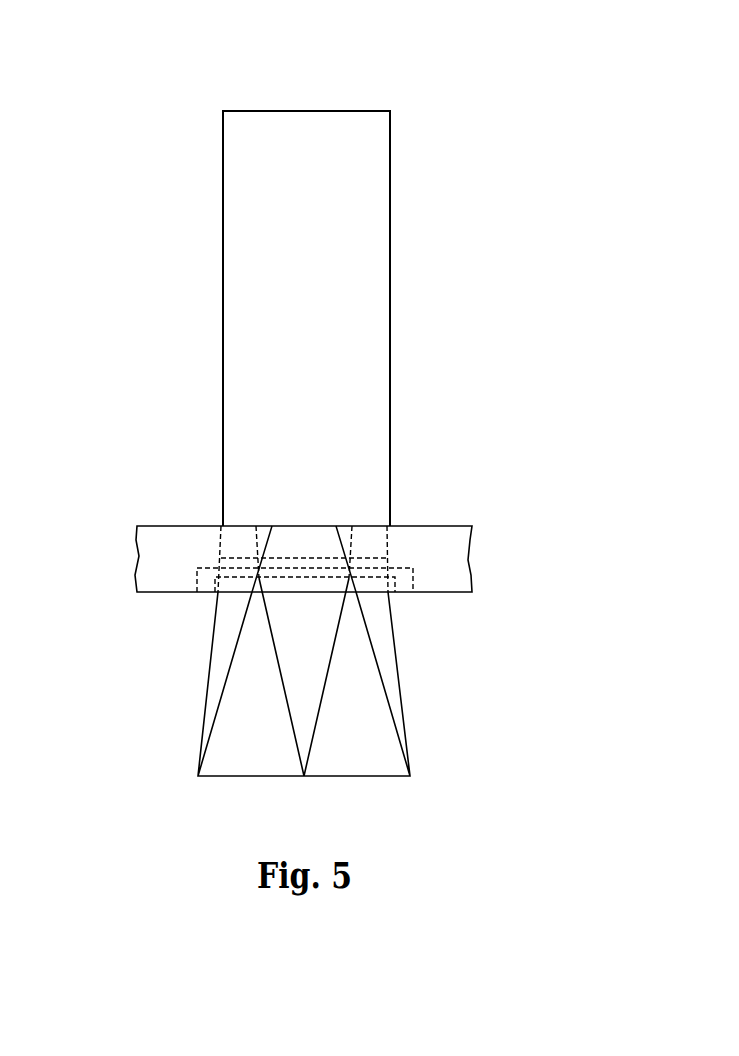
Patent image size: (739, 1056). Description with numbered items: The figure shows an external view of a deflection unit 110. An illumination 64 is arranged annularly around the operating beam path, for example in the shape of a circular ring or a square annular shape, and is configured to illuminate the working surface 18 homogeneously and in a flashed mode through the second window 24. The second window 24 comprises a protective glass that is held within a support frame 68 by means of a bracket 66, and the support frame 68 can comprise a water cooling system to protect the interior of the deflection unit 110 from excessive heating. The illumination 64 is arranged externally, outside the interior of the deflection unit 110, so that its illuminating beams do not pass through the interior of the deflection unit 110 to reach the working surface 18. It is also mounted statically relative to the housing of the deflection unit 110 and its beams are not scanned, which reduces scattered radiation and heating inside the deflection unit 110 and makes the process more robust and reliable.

The deflection unit 110 is at (462, 243).
The support frame 68 is at (458, 544).
The bracket 66 is at (416, 578).
The illumination 64 is at (243, 540).
The second window 24 is at (243, 585).
The working surface 18 is at (434, 746).